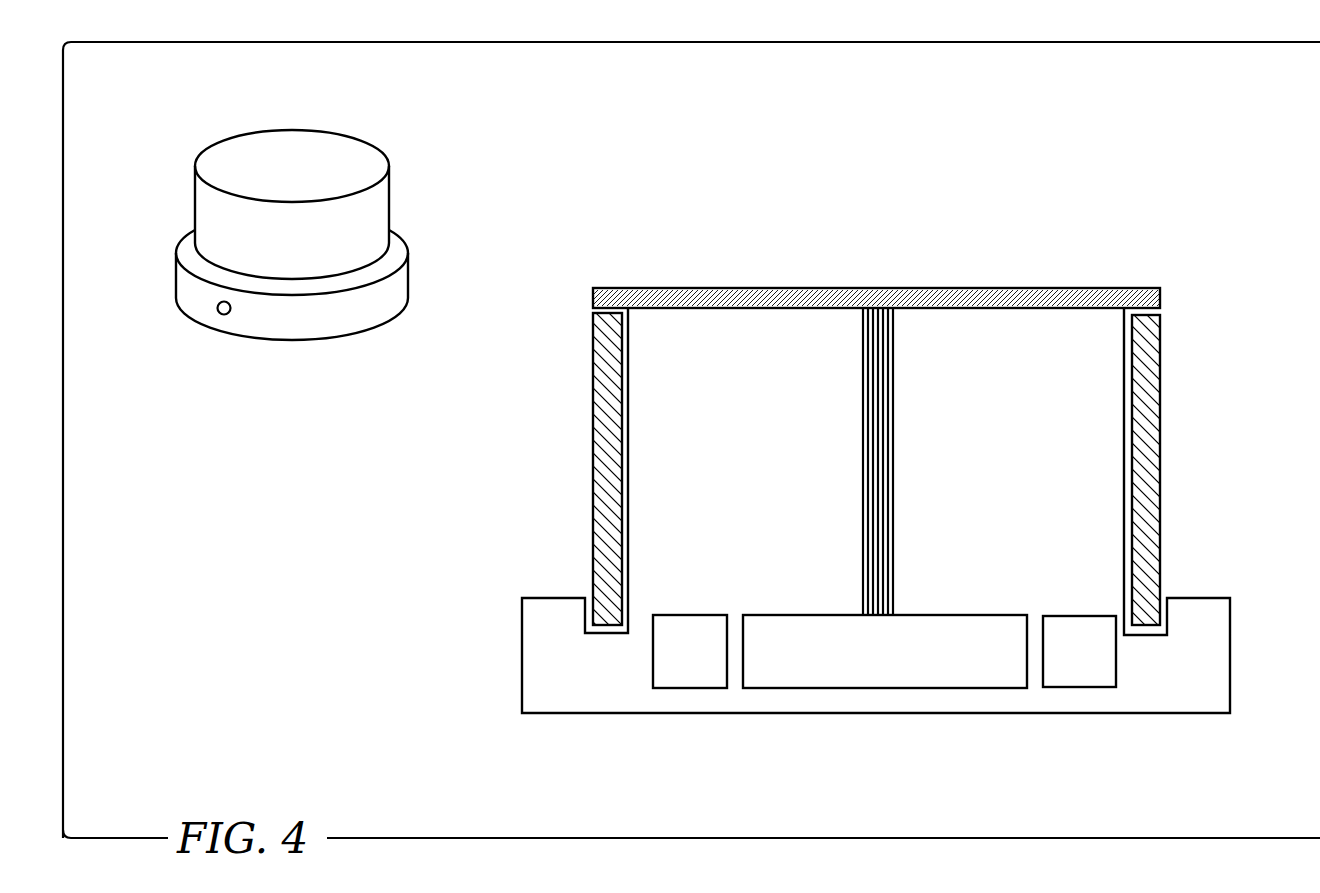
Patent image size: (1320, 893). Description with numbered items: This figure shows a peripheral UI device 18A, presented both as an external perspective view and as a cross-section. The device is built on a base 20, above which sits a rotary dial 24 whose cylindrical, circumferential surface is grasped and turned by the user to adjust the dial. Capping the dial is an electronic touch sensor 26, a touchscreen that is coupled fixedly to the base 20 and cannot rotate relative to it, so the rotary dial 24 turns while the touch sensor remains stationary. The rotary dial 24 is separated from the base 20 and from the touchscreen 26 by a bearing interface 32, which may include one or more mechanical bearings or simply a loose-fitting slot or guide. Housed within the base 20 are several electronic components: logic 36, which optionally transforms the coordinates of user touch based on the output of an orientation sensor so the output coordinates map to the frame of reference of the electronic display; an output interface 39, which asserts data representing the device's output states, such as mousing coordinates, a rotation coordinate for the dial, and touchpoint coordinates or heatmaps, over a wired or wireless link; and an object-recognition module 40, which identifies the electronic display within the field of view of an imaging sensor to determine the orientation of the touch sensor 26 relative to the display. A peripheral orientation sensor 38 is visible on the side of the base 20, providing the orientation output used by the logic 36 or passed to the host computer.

The peripheral UI device 18A is at (430, 158).
The base 20 is at (385, 318).
The rotary dial 24 is at (254, 239).
The electronic touch sensor 26 is at (1003, 233).
The bearing interface 32 is at (591, 311).
The logic 36 is at (898, 663).
The peripheral orientation sensor 38 is at (228, 315).
The output interface 39 is at (703, 663).
The object-recognition module 40 is at (1092, 663).